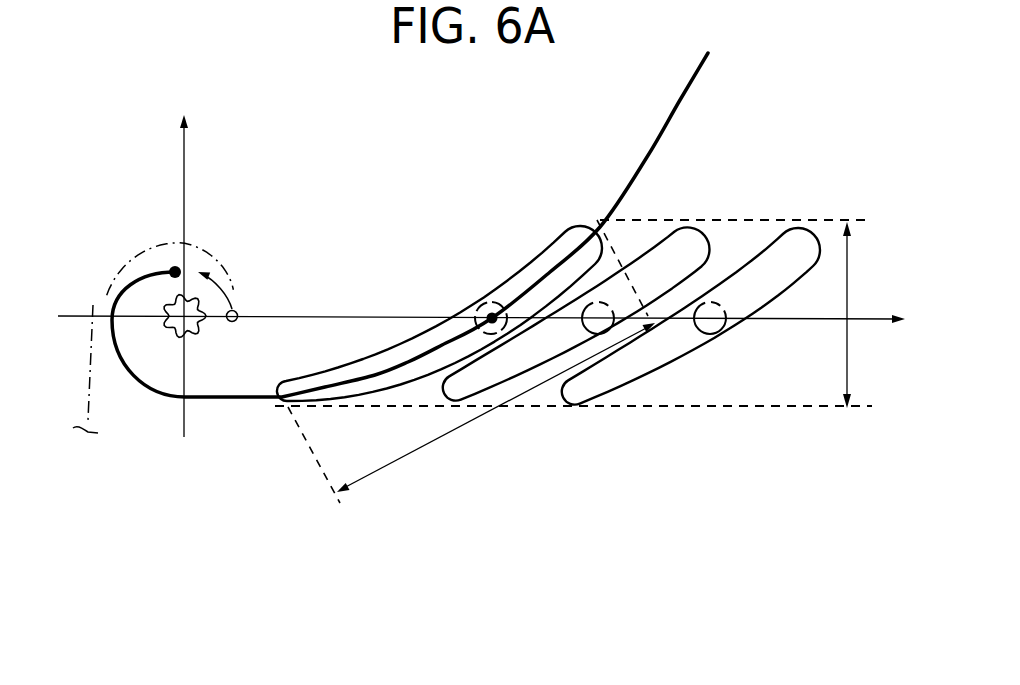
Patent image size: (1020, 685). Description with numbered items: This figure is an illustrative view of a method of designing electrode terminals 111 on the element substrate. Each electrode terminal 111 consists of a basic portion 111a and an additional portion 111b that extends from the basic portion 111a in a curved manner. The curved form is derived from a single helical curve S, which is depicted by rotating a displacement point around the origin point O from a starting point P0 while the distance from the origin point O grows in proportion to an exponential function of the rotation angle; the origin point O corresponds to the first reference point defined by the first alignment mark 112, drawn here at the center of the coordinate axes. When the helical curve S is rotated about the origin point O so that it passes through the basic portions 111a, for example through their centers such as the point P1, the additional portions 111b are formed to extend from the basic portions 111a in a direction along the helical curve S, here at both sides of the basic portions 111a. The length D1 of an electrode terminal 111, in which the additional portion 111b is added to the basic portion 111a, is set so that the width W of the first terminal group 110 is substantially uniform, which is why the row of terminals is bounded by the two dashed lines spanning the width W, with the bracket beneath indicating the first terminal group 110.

The first terminal group 110 is at (591, 383).
The electrode terminal 111 is at (399, 291).
The basic portion 111a is at (475, 308).
The additional portion 111b is at (372, 356).
The first alignment mark 112 is at (197, 333).
The starting point P0 is at (173, 266).
The center of basic portion P1 is at (492, 303).
The helical curve S is at (122, 268).
The origin point O is at (150, 342).
The width of terminal group W is at (850, 270).
The length of electrode terminal D1 is at (496, 407).